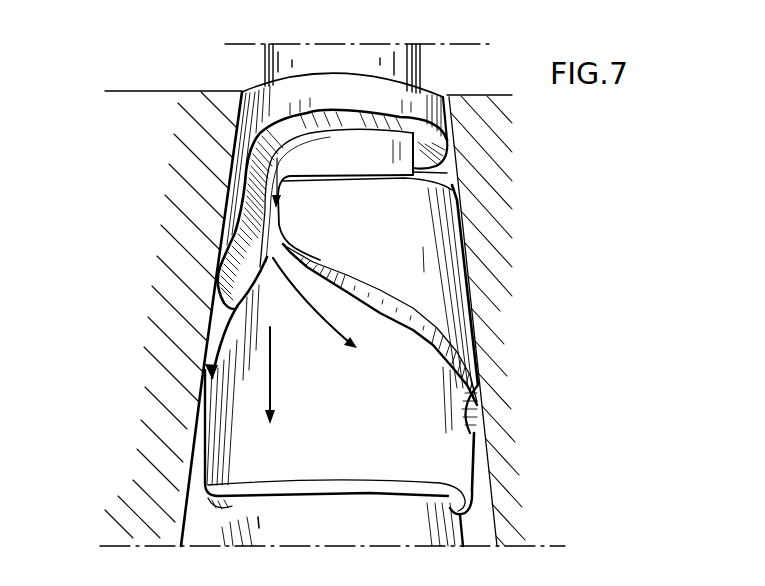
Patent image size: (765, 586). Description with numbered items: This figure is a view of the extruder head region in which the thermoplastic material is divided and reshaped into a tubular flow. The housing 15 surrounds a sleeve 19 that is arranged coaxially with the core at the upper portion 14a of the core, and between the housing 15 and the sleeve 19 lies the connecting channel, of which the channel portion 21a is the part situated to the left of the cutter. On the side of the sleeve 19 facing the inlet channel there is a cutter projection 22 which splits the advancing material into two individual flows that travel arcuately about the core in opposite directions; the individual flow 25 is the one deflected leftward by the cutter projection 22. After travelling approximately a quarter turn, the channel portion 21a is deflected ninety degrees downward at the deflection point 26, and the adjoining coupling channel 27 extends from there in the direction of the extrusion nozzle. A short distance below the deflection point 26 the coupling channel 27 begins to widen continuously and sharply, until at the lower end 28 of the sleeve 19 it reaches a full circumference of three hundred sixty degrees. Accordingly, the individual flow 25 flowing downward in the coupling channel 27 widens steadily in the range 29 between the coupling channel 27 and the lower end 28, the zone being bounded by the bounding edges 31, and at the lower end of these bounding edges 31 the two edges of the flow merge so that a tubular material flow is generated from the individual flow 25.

The upper portion of the core 14a is at (260, 521).
The housing 15 is at (488, 258).
The sleeve 19 is at (440, 222).
The channel portion of the connecting channel 21a is at (347, 138).
The cutter projection 22 is at (425, 162).
The individual flow 25 is at (355, 153).
The deflection point 26 is at (270, 163).
The coupling channel 27 is at (267, 220).
The lower end of the sleeve 28 is at (470, 512).
The range between the coupling channel and the lower end of the sleeve 29 is at (240, 423).
The bounding edges 31 is at (410, 317).